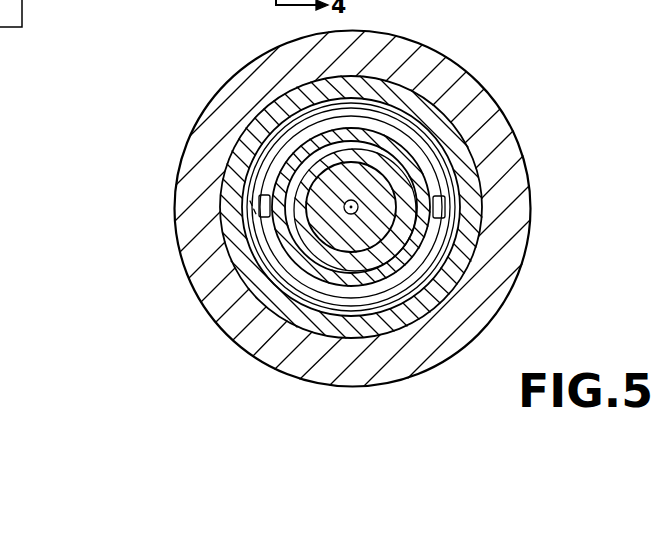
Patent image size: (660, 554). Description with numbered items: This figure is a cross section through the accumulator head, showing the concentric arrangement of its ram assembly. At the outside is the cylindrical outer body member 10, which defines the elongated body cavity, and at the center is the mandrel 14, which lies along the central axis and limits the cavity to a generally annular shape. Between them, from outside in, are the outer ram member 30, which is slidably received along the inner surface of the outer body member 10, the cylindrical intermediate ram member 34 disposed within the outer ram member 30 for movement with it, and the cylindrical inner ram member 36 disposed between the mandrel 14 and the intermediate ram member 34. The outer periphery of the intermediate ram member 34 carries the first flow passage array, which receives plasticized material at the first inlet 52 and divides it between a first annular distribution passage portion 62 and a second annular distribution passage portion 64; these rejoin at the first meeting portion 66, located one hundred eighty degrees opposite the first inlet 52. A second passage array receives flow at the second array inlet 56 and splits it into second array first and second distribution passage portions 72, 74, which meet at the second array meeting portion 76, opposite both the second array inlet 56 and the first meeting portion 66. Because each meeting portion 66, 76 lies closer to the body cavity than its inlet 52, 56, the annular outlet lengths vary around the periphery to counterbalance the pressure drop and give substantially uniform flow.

The outer body member 10 is at (368, 50).
The mandrel 14 is at (405, 95).
The outer ram member 30 is at (443, 177).
The intermediate ram member 34 is at (410, 162).
The inner ram member 36 is at (375, 153).
The first inlet 52 is at (262, 205).
The second array inlet 56 is at (440, 208).
The first annular distribution passage portion 62 is at (280, 283).
The second annular distribution passage portion 64 is at (292, 135).
The first meeting portion 66 is at (455, 224).
The second array first distribution passage portion 72 is at (412, 299).
The second array second distribution passage portion 74 is at (293, 92).
The second array meeting portion 76 is at (238, 197).